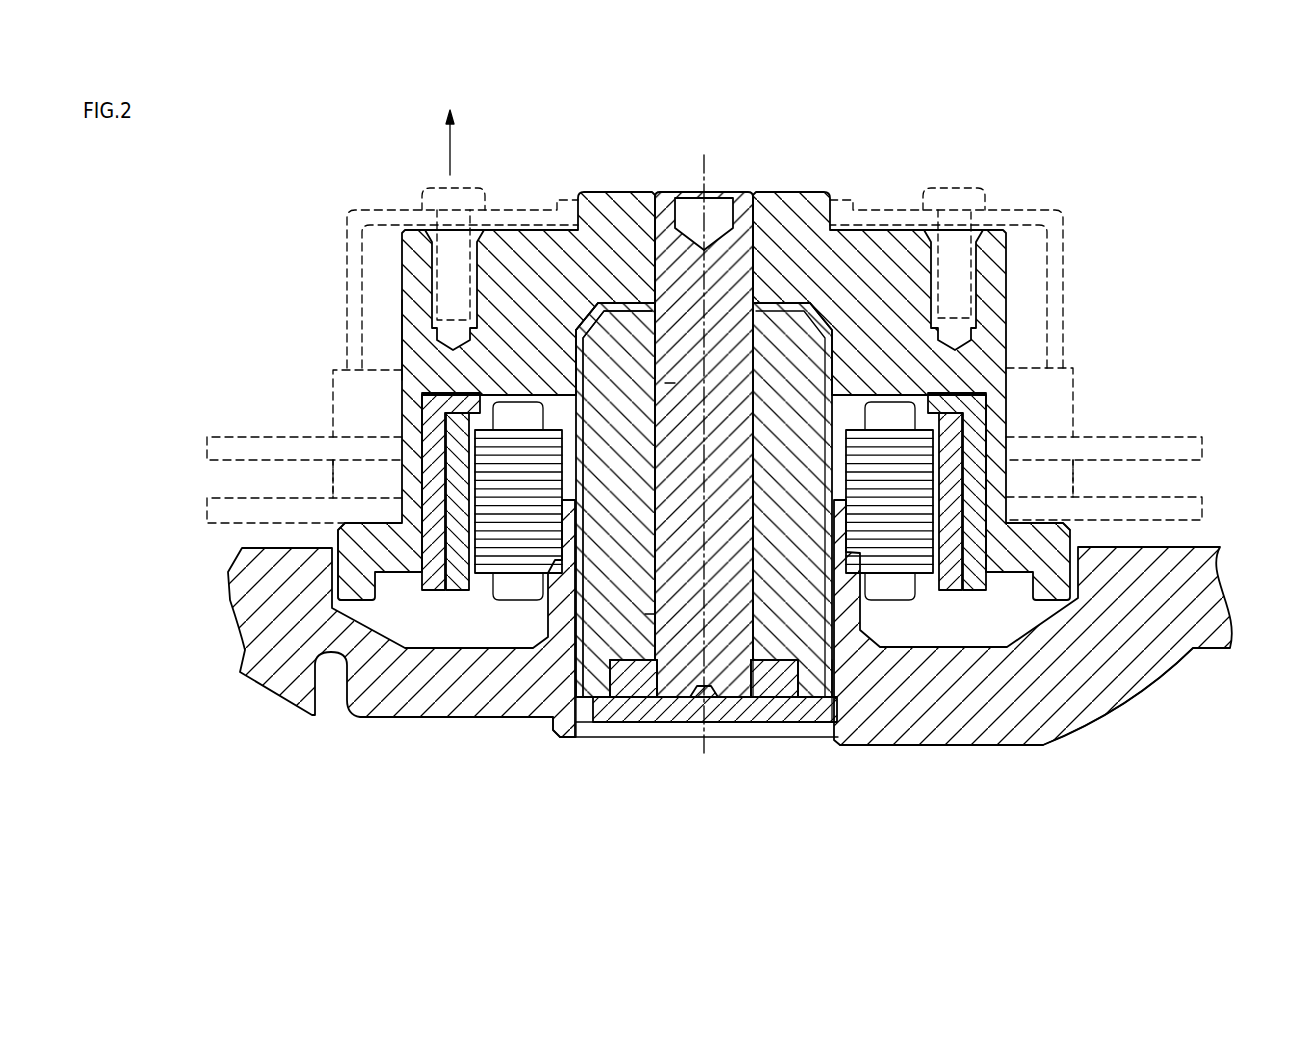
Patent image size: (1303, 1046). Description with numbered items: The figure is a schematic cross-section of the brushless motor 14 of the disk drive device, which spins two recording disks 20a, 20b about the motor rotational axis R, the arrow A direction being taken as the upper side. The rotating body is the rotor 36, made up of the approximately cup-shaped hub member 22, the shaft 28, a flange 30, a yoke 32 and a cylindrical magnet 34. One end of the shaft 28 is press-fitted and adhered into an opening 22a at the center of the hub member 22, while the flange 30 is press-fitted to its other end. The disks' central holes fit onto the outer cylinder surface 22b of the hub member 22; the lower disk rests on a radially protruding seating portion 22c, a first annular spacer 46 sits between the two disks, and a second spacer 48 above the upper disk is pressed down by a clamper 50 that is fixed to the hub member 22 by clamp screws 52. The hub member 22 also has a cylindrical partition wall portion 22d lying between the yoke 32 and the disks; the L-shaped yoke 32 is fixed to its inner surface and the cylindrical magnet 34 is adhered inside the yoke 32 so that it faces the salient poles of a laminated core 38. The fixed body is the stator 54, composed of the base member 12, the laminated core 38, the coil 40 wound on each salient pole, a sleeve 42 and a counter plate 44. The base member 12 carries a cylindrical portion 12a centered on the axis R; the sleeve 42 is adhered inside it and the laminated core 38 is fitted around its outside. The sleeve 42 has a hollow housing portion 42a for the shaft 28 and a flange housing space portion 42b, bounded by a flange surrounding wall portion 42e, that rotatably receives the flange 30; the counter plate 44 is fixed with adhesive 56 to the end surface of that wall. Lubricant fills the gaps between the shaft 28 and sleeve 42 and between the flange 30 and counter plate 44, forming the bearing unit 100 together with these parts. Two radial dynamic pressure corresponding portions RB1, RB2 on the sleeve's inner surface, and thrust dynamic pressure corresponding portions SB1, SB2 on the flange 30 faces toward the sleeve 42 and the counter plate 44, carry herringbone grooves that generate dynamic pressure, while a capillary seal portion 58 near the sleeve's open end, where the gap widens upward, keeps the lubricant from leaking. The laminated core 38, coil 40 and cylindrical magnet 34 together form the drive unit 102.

The base member 12 is at (271, 683).
The cylindrical portion 12a is at (550, 727).
The brushless motor 14 is at (866, 140).
The recording disk 20a is at (1200, 513).
The recording disk 20b is at (1158, 437).
The hub member 22 is at (612, 205).
The opening 22a is at (755, 245).
The outer cylinder surface 22b is at (402, 338).
The seating portion 22c is at (1040, 520).
The partition wall portion 22d is at (412, 485).
The shaft 28 is at (750, 210).
The flange 30 is at (782, 680).
The yoke 32 is at (433, 578).
The cylindrical magnet 34 is at (457, 582).
The rotor 36 is at (792, 210).
The laminated core 38 is at (897, 567).
The coil 40 is at (505, 586).
The sleeve 42 is at (568, 345).
The housing portion 42a is at (604, 338).
The flange housing space portion 42b is at (618, 688).
The flange surrounding wall portion 42e is at (575, 738).
The counter plate 44 is at (662, 708).
The first annular spacer 46 is at (1073, 478).
The second spacer 48 is at (1066, 374).
The clamper 50 is at (874, 208).
The clamp screws 52 is at (465, 188).
The stator 54 is at (962, 722).
The adhesive 56 is at (580, 708).
The capillary seal portion 58 is at (668, 380).
The bearing unit 100 is at (723, 675).
The drive unit 102 is at (952, 612).
The motor rotational axis R is at (704, 178).
The arrow A direction A is at (441, 142).
The radial dynamic pressure corresponding portion RB1 is at (650, 614).
The radial dynamic pressure corresponding portion RB2 is at (670, 383).
The thrust dynamic pressure corresponding portion SB1 is at (838, 667).
The thrust dynamic pressure corresponding portion SB2 is at (770, 690).